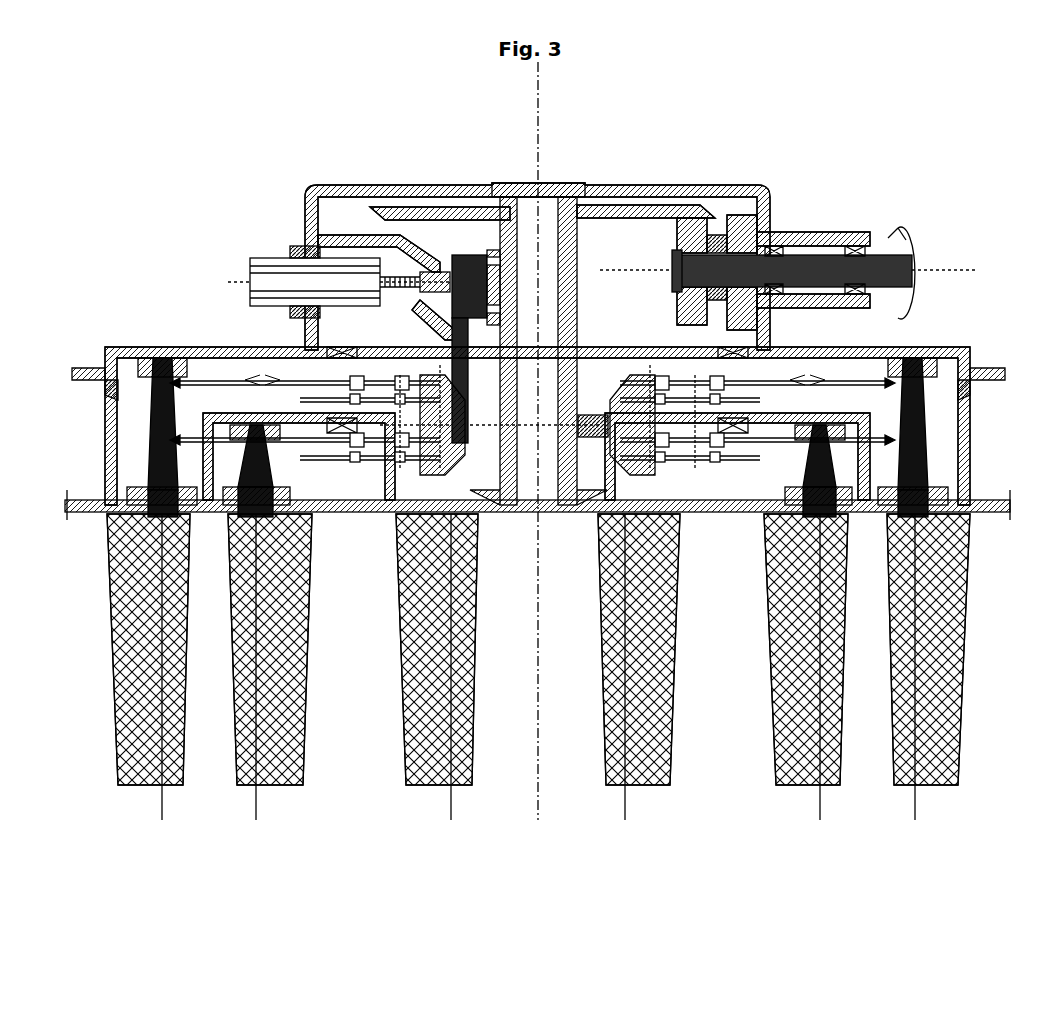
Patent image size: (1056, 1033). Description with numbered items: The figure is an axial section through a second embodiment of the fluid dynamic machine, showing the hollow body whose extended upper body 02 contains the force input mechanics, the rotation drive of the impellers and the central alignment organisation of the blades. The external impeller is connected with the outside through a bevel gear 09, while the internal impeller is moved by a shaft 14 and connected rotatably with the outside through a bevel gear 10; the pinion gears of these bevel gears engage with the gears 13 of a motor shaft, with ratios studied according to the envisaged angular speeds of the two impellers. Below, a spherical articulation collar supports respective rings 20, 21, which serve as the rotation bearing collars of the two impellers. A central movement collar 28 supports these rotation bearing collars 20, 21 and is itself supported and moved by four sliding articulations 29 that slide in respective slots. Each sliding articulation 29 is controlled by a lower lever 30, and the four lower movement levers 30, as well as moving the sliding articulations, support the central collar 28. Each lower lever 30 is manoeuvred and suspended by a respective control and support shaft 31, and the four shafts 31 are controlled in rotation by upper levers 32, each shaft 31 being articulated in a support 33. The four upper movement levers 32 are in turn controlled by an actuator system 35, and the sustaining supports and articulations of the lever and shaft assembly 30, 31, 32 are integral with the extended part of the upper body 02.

The upper body 02 is at (760, 197).
The bevel gear 09 is at (712, 215).
The bevel gear 10 is at (770, 333).
The gears of motor shaft 13 is at (845, 240).
The shaft 14 is at (583, 335).
The rotation bearing collar 20 is at (648, 785).
The rotation bearing collar 21 is at (678, 580).
The central movement collar 28 is at (245, 282).
The sliding articulation 29 is at (546, 300).
The lower lever 30 is at (367, 253).
The control and support shaft 31 is at (481, 253).
The upper lever 32 is at (450, 253).
The support 33 is at (400, 228).
The actuator system 35 is at (290, 267).